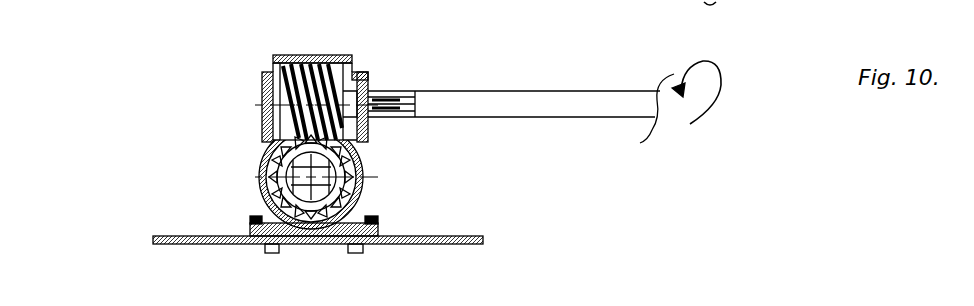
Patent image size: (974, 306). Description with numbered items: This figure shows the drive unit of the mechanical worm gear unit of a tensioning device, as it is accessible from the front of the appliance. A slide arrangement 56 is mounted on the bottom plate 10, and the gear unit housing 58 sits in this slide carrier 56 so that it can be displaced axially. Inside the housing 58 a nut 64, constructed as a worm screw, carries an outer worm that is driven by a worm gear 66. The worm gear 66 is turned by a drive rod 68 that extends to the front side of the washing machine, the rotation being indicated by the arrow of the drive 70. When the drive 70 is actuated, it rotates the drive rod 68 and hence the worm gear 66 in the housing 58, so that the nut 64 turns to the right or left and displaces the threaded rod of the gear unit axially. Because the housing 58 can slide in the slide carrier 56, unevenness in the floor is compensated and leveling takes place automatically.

The bottom plate 10 is at (472, 231).
The slide arrangement 56 is at (383, 226).
The gear unit housing 58 is at (363, 188).
The nut 64 is at (367, 158).
The worm gear 66 is at (358, 82).
The drive rod 68 is at (511, 85).
The drive 70 is at (713, 100).